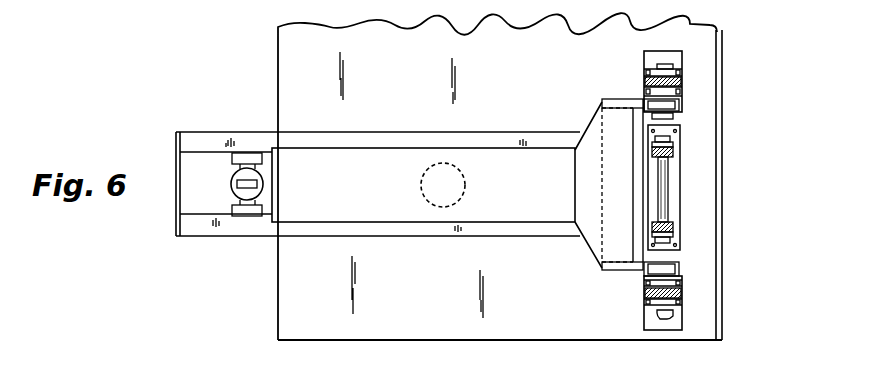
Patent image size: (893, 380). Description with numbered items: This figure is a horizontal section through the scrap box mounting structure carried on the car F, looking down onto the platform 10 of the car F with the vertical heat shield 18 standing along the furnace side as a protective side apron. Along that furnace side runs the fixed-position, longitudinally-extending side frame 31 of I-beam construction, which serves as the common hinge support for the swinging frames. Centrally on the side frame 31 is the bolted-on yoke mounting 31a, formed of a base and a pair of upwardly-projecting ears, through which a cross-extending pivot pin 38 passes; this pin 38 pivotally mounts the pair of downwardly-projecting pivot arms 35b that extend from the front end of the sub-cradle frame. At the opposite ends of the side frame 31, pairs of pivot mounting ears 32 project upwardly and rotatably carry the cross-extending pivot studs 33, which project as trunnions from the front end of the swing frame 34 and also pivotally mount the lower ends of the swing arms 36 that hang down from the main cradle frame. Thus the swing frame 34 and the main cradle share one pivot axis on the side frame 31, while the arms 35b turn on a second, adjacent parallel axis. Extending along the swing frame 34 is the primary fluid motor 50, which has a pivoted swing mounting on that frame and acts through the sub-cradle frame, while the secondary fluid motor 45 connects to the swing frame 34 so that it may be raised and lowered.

The car platform 10 is at (491, 26).
The vertical heat shield 18 is at (723, 48).
The swing frame 34 is at (230, 238).
The secondary fluid motor 45 is at (421, 182).
The primary fluid motor 50 is at (230, 178).
The side frame 31 is at (643, 317).
The yoke mounting 31a is at (676, 249).
The pivot mounting ears 32 is at (682, 70).
The pivot studs 33 is at (664, 64).
The swing arms 36 is at (682, 81).
The pivot arms 35b is at (674, 152).
The pivot pin 38 is at (668, 194).
The car F is at (392, 344).